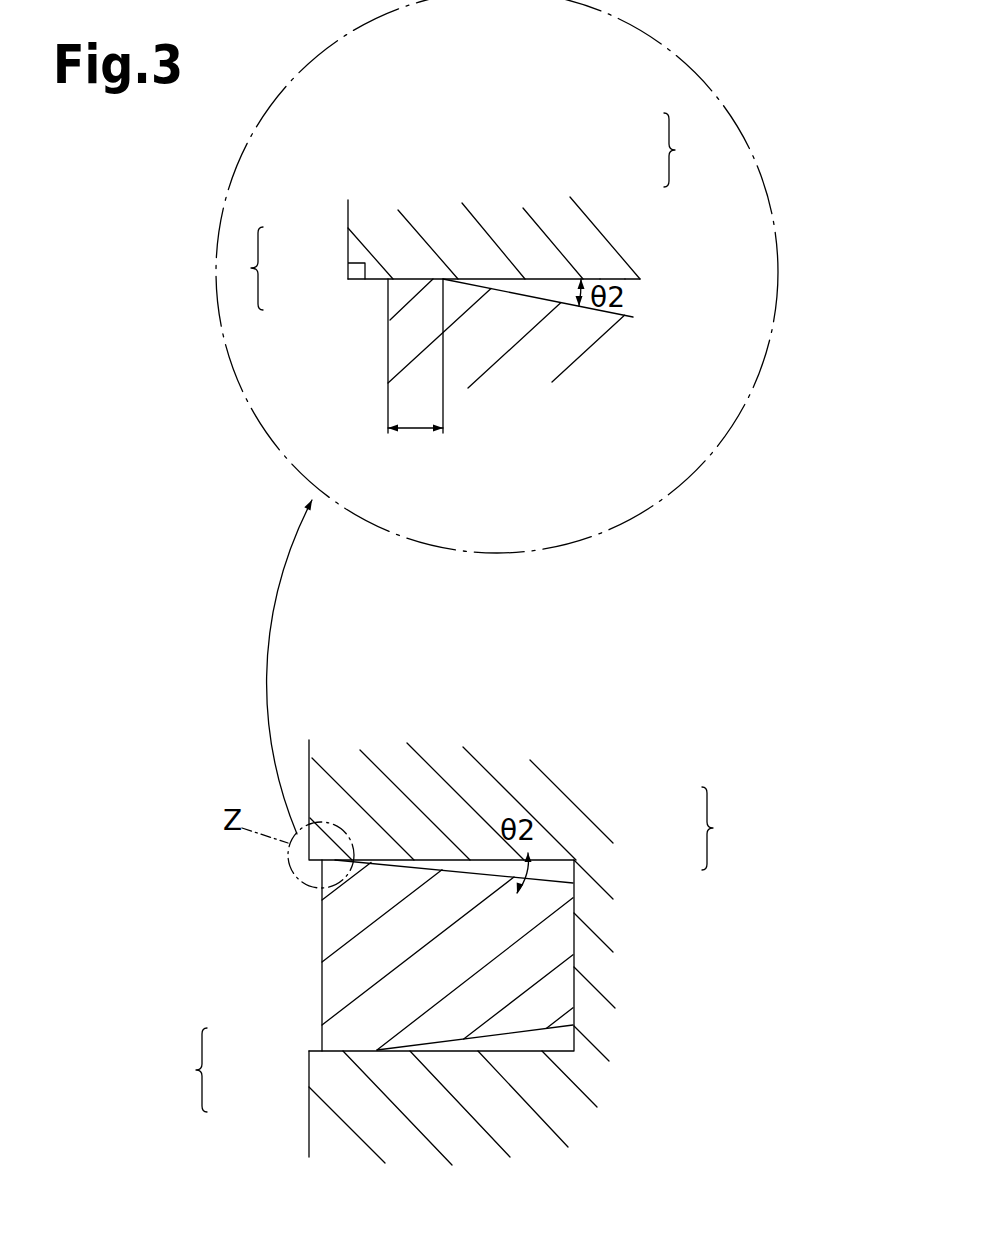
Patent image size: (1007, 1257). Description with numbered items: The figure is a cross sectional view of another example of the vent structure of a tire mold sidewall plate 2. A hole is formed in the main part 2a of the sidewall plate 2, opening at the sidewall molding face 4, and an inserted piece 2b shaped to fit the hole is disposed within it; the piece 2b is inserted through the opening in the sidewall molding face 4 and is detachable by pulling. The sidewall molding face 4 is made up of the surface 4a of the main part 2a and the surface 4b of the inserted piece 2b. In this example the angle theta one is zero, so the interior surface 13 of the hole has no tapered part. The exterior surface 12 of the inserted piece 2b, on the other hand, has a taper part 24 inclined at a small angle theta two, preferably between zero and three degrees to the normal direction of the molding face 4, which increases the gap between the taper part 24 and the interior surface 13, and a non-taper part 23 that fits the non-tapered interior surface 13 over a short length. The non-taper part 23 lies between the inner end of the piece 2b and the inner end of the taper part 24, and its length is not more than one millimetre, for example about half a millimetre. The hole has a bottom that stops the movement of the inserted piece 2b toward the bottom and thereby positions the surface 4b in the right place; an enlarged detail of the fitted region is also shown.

The sidewall plate 2 is at (716, 828).
The main part of the sidewall plate 2a is at (420, 192).
The inserted piece 2b is at (625, 384).
The sidewall molding face 4 is at (220, 669).
The surface of the main part 4a is at (345, 237).
The surface of the inserted piece 4b is at (386, 322).
The exterior surface of the inserted piece 12 is at (689, 150).
The non-taper part 23 is at (420, 279).
The taper part 24 is at (537, 279).
The interior surface of the hole 13 is at (637, 280).